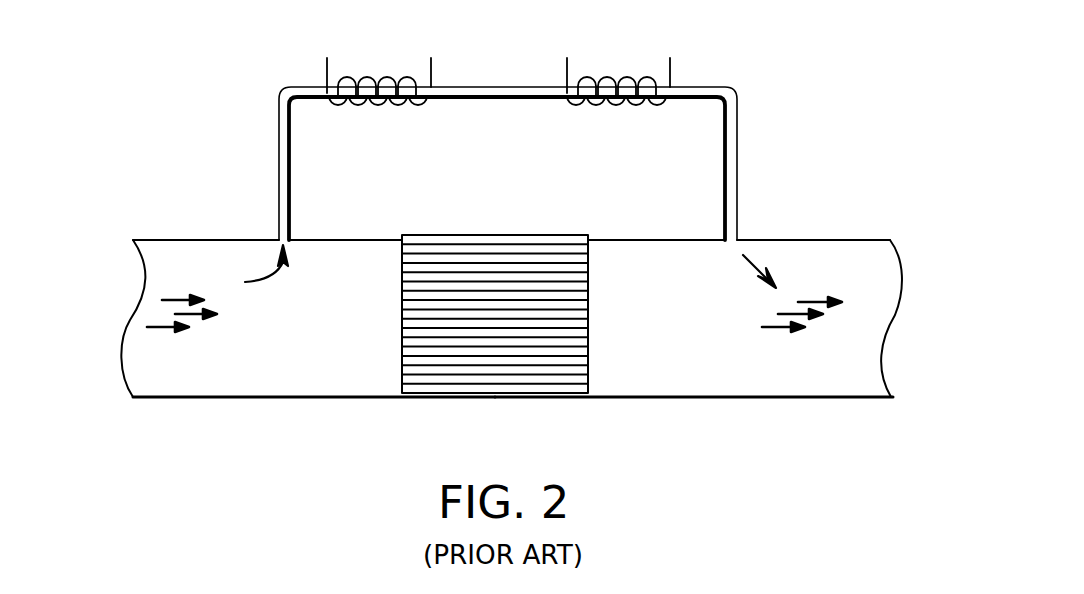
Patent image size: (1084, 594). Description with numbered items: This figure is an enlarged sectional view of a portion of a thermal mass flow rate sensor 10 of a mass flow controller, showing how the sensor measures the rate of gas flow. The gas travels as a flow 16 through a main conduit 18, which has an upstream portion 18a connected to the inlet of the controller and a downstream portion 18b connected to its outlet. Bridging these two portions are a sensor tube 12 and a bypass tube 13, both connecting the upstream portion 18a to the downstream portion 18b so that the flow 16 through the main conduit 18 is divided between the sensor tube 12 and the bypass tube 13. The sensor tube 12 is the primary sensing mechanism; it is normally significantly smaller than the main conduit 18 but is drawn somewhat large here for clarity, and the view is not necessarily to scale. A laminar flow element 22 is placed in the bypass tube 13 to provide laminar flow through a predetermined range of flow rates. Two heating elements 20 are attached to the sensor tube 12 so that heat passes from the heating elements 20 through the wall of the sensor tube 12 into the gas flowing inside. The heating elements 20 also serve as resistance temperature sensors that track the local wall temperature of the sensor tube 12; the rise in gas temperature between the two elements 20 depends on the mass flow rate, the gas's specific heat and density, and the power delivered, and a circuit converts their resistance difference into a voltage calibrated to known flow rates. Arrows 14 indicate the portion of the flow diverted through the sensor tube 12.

The mass flow rate sensor 10 is at (155, 469).
The sensor tube 12 is at (279, 155).
The bypass tube 13 is at (357, 240).
The bypass flow 14 is at (277, 275).
The flow 16 is at (192, 322).
The main conduit 18 is at (160, 248).
The upstream portion 18a is at (277, 388).
The downstream portion 18b is at (668, 388).
The heating elements 20 is at (383, 107).
The laminar flow element 22 is at (512, 235).